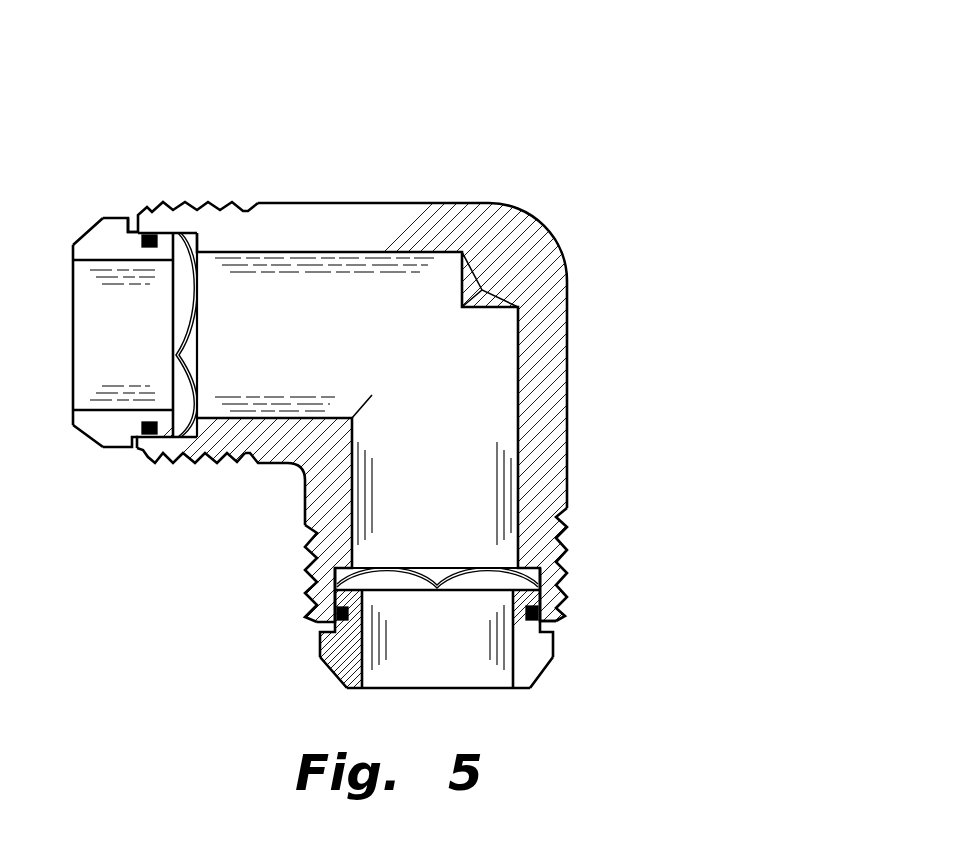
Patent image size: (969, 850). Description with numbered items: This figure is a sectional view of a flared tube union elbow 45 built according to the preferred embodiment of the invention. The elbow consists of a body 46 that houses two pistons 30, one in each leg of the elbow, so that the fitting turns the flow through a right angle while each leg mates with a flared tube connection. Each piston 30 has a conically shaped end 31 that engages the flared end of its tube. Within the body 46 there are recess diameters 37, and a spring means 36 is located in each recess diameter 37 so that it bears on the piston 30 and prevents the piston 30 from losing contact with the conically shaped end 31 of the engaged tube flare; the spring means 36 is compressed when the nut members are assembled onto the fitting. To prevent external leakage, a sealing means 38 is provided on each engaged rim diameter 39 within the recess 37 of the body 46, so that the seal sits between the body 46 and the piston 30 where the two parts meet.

The flared tube union elbow 45 is at (484, 365).
The body 46 is at (567, 260).
The piston 30 is at (118, 220).
The conically shaped end 31 is at (97, 222).
The spring means 36 is at (178, 355).
The recess diameter 37 is at (158, 433).
The sealing means 38 is at (157, 233).
The engaged rim diameter 39 is at (143, 237).